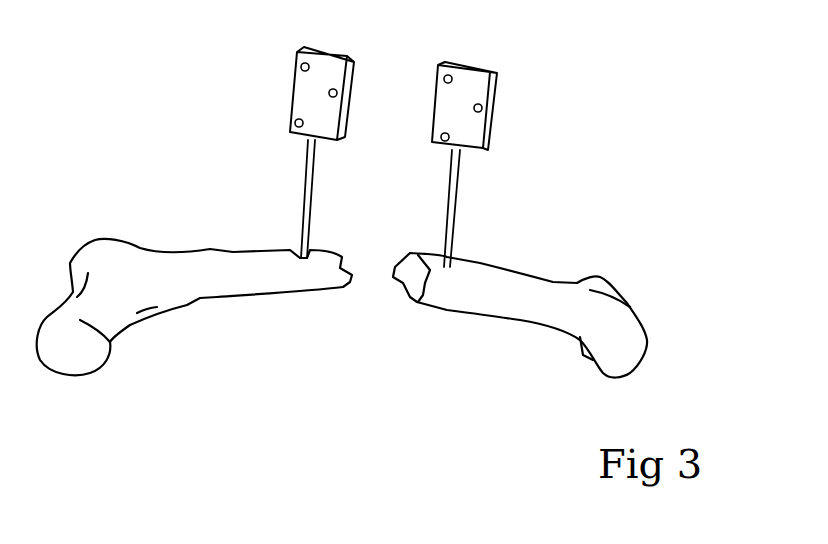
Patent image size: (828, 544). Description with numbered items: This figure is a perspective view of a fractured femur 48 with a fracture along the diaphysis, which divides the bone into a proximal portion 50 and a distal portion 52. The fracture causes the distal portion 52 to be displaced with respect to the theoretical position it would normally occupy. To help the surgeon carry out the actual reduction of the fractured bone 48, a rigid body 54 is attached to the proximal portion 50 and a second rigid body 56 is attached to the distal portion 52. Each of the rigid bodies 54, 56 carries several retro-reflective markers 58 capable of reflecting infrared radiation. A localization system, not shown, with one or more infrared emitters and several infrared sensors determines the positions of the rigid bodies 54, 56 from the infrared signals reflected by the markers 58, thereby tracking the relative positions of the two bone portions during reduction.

The fractured femur 48 is at (323, 312).
The proximal portion 50 is at (207, 287).
The distal portion 52 is at (495, 300).
The rigid body 54 is at (304, 152).
The rigid body 56 is at (457, 183).
The retro-reflective markers 58 is at (300, 63).